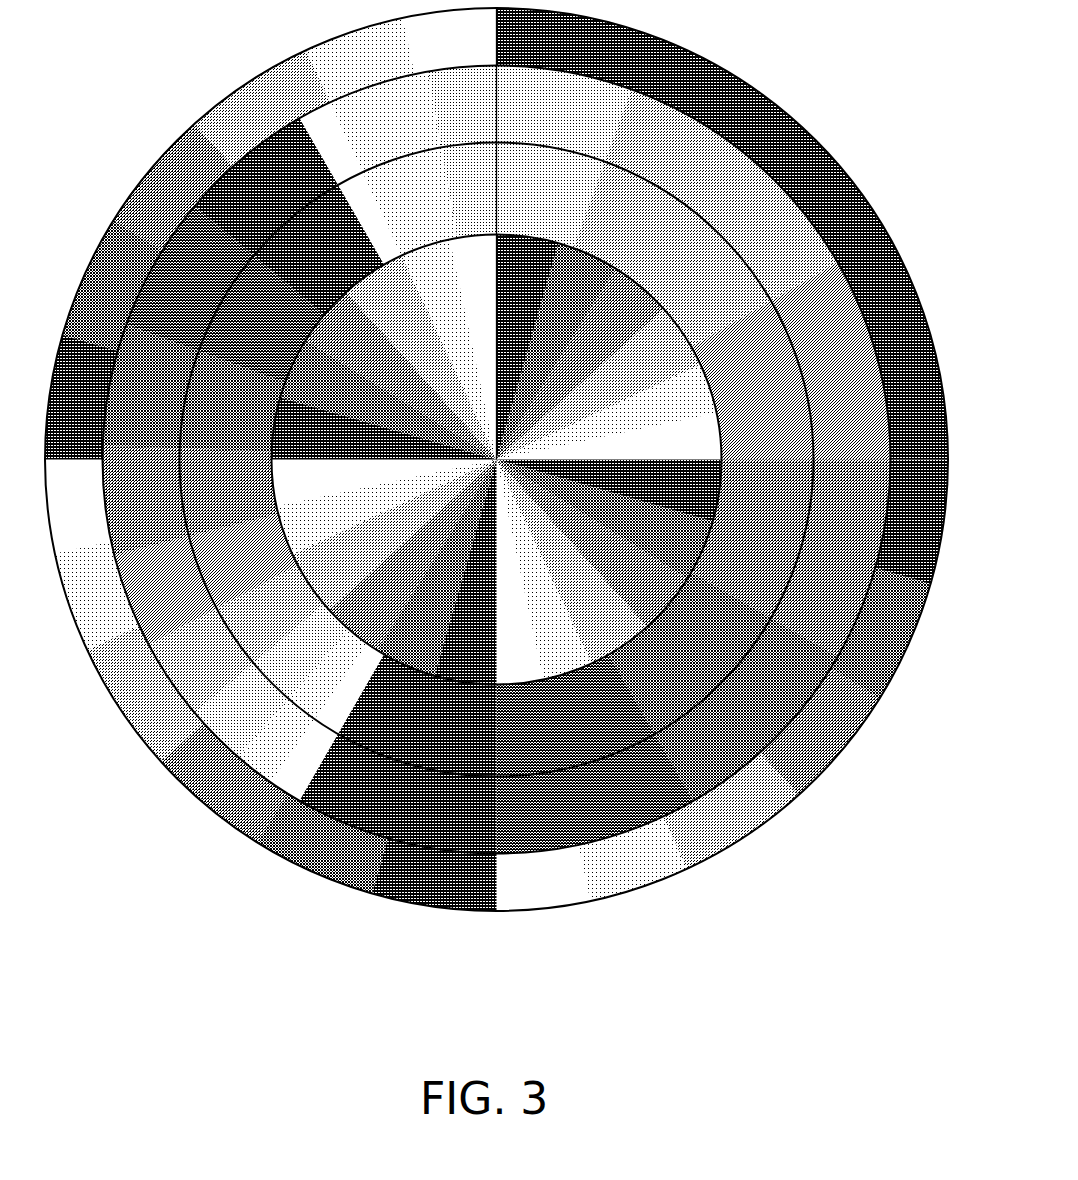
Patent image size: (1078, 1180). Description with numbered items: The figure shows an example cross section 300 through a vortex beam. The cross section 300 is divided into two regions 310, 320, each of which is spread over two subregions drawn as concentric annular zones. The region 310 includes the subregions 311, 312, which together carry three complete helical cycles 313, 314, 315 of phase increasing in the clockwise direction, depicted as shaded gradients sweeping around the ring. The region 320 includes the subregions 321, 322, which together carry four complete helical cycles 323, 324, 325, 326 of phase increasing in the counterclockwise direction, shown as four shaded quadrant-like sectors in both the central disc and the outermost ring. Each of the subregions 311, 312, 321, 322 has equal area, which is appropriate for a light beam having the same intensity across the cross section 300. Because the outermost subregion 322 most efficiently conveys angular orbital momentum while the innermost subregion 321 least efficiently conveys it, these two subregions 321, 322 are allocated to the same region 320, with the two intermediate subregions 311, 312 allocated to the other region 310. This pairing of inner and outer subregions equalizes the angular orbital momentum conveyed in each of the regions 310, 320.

The cross section 300 is at (65, 45).
The region 310 is at (437, 156).
The subregion 311 is at (437, 201).
The subregion 312 is at (437, 109).
The helical cycle 313 is at (667, 723).
The helical cycle 314 is at (160, 469).
The helical cycle 315 is at (650, 201).
The region 320 is at (437, 56).
The innermost subregion 321 is at (437, 346).
The outermost subregion 322 is at (377, 56).
The helical cycle 323 is at (792, 191).
The helical cycle 324 is at (162, 191).
The helical cycle 325 is at (167, 751).
The helical cycle 326 is at (792, 751).